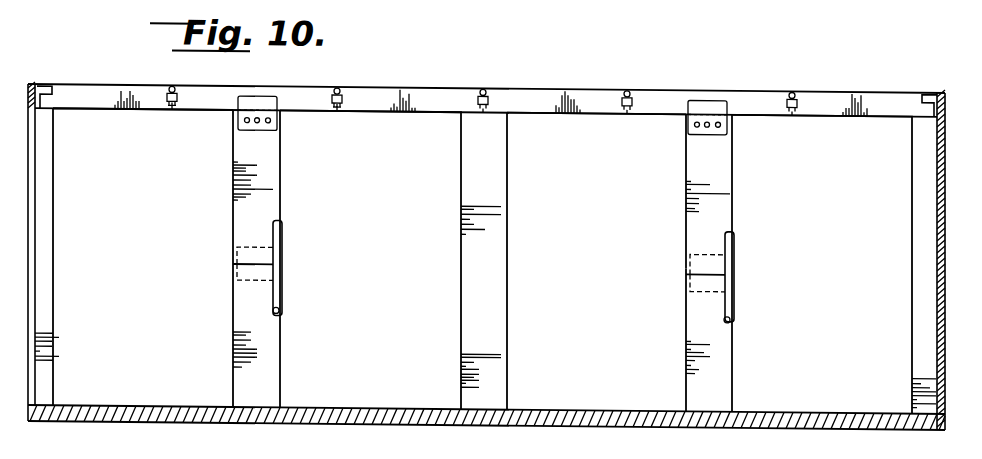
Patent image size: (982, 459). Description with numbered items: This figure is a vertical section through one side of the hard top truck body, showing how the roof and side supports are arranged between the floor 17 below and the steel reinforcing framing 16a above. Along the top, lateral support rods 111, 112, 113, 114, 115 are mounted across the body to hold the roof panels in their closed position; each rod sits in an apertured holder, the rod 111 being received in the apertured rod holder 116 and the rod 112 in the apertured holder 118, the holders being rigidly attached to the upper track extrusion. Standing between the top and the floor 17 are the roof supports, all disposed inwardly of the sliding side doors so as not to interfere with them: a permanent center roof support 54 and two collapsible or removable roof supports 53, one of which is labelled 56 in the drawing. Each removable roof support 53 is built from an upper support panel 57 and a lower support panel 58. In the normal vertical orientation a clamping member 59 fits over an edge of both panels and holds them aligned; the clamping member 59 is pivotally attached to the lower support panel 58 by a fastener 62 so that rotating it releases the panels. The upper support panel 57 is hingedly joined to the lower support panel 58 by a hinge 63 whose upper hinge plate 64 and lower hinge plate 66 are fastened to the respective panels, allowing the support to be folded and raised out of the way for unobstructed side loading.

The framing 16a is at (450, 87).
The floor 17 is at (348, 405).
The top support rod 111 is at (170, 85).
The support rod 112 is at (340, 88).
The support rod 113 is at (490, 90).
The support rod 114 is at (633, 92).
The support rod 115 is at (798, 94).
The apertured rod holder 116 is at (166, 101).
The apertured holder 118 is at (343, 104).
The removable roof support 53 is at (716, 256).
The permanent center roof support 54 is at (456, 240).
The door post 56 is at (229, 232).
The upper support panel 57 is at (686, 203).
The lower support panel 58 is at (686, 367).
The clamping member 59 is at (735, 243).
The fastener 62 is at (731, 313).
The hinge 63 is at (686, 268).
The upper hinge plate 64 is at (690, 250).
The lower hinge plate 66 is at (690, 285).